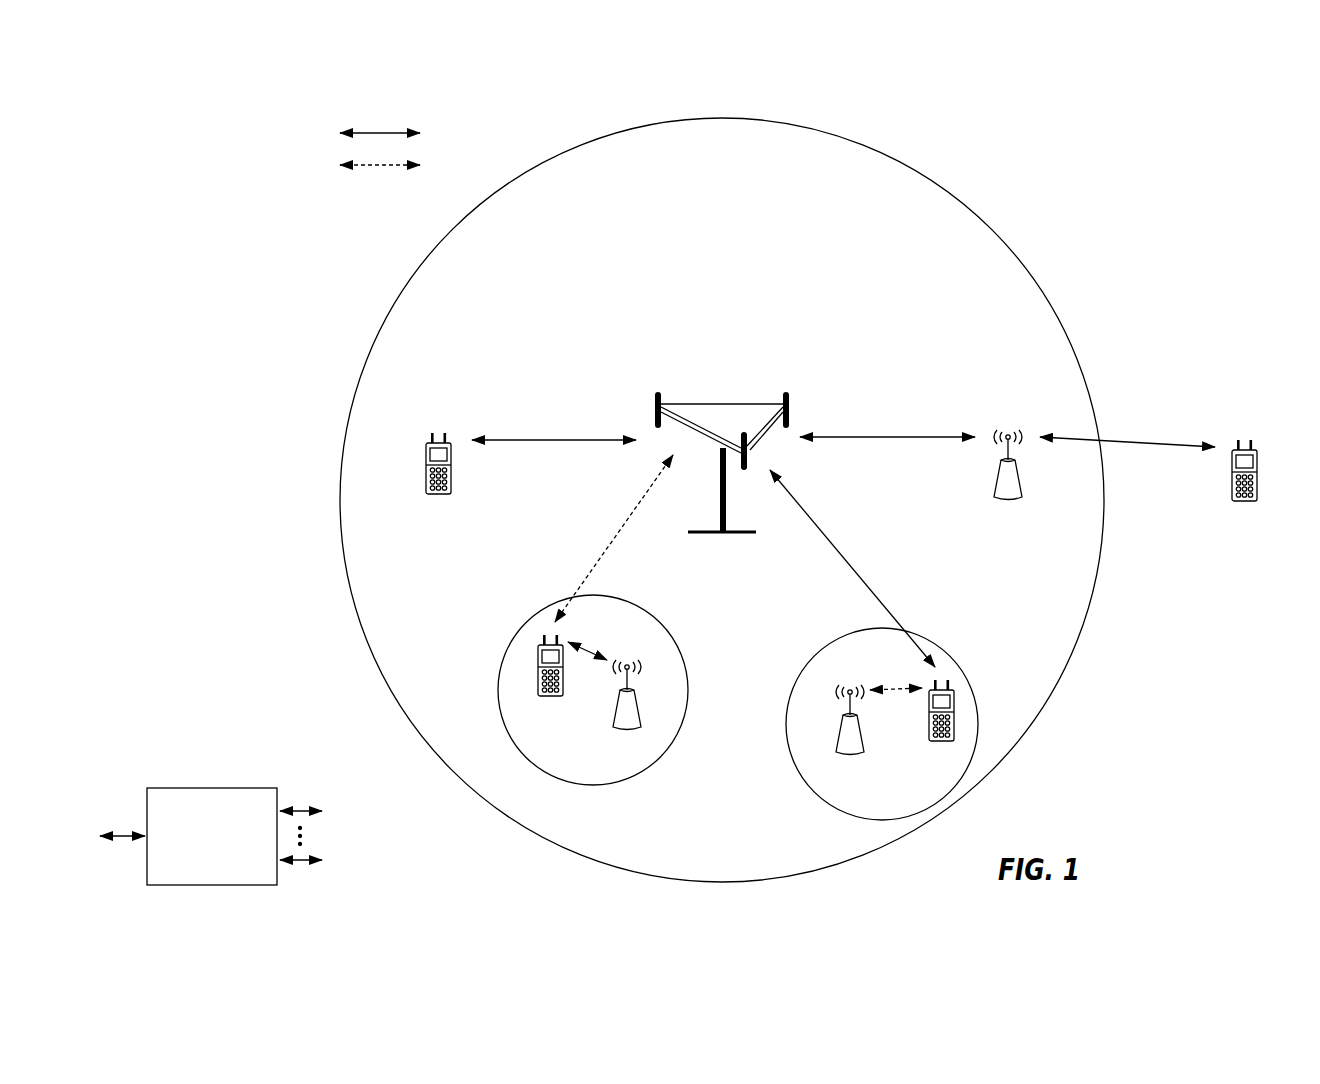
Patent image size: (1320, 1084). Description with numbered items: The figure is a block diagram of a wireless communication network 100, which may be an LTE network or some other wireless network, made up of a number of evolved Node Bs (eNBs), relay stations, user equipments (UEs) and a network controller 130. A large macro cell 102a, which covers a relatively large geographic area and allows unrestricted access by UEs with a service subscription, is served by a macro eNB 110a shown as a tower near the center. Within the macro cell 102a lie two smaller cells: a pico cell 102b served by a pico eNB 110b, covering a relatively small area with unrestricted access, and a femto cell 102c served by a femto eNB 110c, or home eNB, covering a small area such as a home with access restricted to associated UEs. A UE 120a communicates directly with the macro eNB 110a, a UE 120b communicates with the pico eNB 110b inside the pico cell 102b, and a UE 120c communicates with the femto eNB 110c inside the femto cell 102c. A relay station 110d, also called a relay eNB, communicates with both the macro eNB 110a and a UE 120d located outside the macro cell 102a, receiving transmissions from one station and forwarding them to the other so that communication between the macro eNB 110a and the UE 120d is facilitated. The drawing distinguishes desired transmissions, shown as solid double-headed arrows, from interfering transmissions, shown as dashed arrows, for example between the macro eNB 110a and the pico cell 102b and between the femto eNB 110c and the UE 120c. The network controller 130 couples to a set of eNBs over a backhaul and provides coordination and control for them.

The wireless communication network 100 is at (1171, 179).
The macro cell 102a is at (977, 214).
The pico cell 102b is at (669, 629).
The femto cell 102c is at (808, 663).
The macro eNB 110a is at (722, 403).
The pico eNB 110b is at (641, 720).
The femto eNB 110c is at (838, 736).
The relay station 110d is at (1011, 432).
The UE 120a is at (426, 450).
The UE 120b is at (538, 686).
The UE 120c is at (929, 732).
The UE 120d is at (1258, 458).
The network controller 130 is at (213, 787).